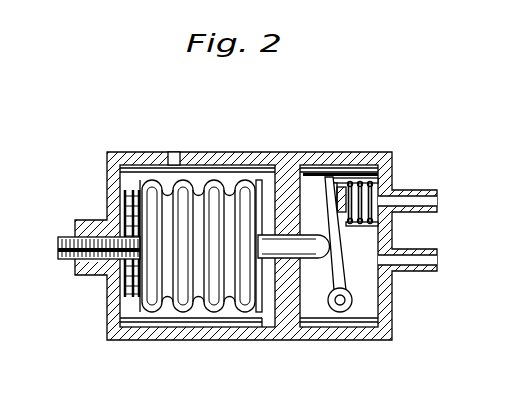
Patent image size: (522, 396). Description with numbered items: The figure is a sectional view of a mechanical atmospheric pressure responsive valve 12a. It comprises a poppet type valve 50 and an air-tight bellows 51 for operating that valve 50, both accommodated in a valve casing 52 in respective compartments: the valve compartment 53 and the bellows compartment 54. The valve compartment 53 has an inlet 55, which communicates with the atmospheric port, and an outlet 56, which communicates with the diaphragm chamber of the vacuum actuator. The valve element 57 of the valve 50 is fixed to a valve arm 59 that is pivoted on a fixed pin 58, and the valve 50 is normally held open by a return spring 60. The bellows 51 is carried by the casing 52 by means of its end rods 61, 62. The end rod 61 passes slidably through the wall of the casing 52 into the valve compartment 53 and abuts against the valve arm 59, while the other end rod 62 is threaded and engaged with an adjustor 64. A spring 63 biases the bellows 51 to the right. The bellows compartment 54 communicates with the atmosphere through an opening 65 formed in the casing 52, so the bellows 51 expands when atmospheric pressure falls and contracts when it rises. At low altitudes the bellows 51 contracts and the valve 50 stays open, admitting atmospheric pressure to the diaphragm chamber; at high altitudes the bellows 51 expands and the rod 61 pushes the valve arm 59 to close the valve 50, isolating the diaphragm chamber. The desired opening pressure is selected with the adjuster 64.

The mechanical valve 12a is at (120, 132).
The poppet type valve 50 is at (352, 167).
The air-tight bellows 51 is at (134, 179).
The valve casing 52 is at (237, 153).
The valve compartment 53 is at (367, 292).
The bellows compartment 54 is at (258, 324).
The inlet 55 is at (438, 260).
The outlet 56 is at (438, 196).
The valve element 57 is at (350, 170).
The fixed pin 58 is at (345, 308).
The valve arm 59 is at (310, 177).
The return spring 60 is at (373, 180).
The end rod 61 is at (316, 263).
The end rod 62 is at (58, 249).
The spring 63 is at (122, 190).
The adjustor 64 is at (83, 276).
The opening 65 is at (174, 153).